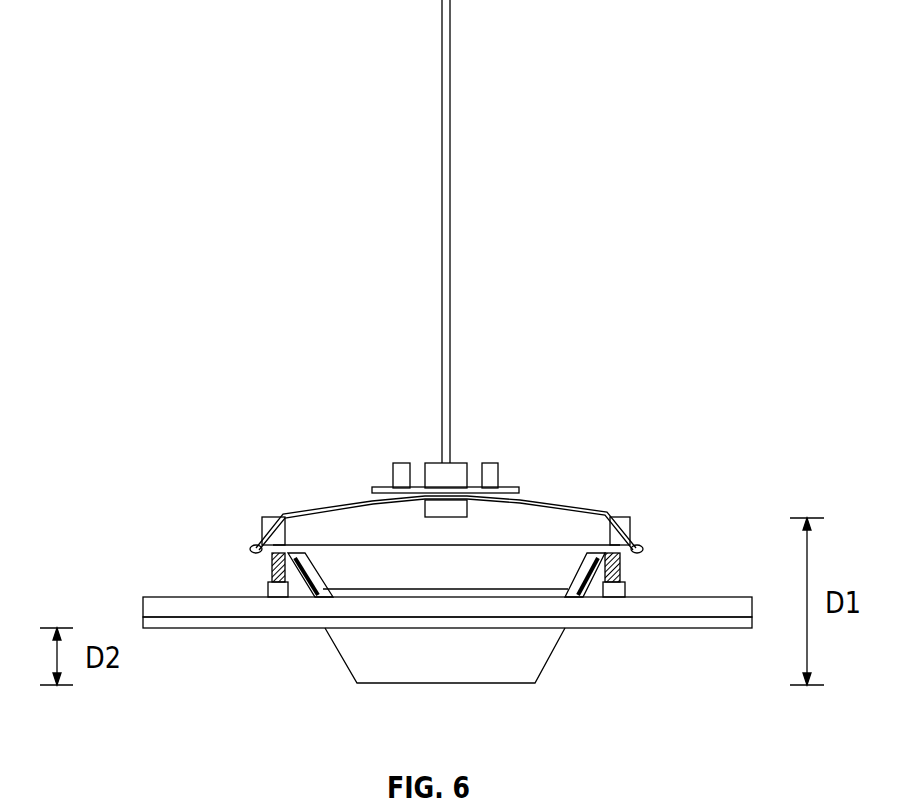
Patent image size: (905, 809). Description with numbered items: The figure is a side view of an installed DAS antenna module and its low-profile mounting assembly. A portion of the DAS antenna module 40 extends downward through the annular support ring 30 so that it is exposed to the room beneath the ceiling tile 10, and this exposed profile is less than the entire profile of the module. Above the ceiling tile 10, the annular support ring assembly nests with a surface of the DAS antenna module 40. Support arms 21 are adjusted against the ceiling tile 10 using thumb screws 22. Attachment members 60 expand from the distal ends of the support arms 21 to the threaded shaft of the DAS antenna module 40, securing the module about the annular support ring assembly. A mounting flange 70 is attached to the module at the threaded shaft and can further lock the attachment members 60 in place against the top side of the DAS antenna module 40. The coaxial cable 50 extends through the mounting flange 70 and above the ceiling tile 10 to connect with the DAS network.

The ceiling tile 10 is at (161, 597).
The support arms 21 is at (257, 546).
The thumb screws 22 is at (266, 558).
The annular support ring 30 is at (284, 628).
The DAS antenna module 40 is at (378, 673).
The coaxial cable 50 is at (450, 133).
The attachment members 60 is at (328, 505).
The mounting flange 70 is at (488, 462).